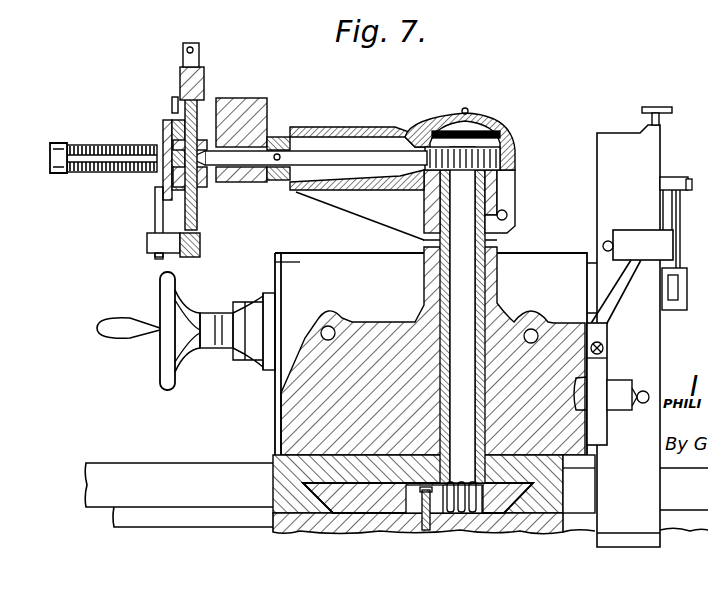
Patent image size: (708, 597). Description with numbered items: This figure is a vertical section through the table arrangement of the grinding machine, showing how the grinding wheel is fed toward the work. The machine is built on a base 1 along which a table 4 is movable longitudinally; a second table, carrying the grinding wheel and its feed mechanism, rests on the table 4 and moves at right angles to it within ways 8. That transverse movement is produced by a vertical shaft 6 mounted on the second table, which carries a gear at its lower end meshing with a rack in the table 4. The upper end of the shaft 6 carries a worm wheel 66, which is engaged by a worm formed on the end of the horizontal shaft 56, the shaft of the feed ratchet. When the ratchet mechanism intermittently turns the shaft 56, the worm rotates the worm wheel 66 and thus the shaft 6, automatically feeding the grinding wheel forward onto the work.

The base 1 is at (457, 515).
The table 4 is at (367, 517).
The shaft 6 is at (482, 228).
The ways 8 is at (521, 517).
The shaft 56 is at (245, 157).
The worm wheel 66 is at (489, 140).